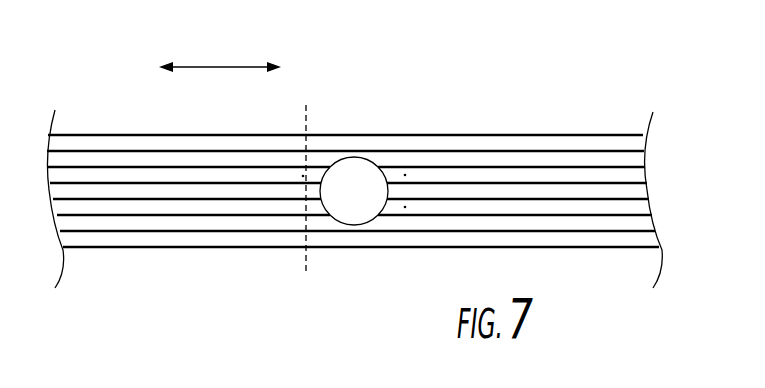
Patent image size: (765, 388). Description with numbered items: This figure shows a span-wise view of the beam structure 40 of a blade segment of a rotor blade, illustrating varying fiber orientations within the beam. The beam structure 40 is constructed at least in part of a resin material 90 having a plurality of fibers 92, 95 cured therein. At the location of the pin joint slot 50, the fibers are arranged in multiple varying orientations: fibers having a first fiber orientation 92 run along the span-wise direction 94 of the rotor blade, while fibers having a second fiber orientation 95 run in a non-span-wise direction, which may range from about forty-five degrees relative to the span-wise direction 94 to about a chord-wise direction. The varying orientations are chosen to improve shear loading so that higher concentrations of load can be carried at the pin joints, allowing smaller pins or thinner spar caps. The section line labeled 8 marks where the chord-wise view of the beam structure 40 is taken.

The beam structure 40 is at (354, 179).
The pin joint slot 50 is at (387, 160).
The resin material 90 is at (123, 158).
The fibers having a first fiber orientation 92 is at (93, 213).
The span-wise direction 94 is at (217, 67).
The fibers having a second fiber orientation 95 is at (304, 205).
The section line 8- 8 is at (288, 192).